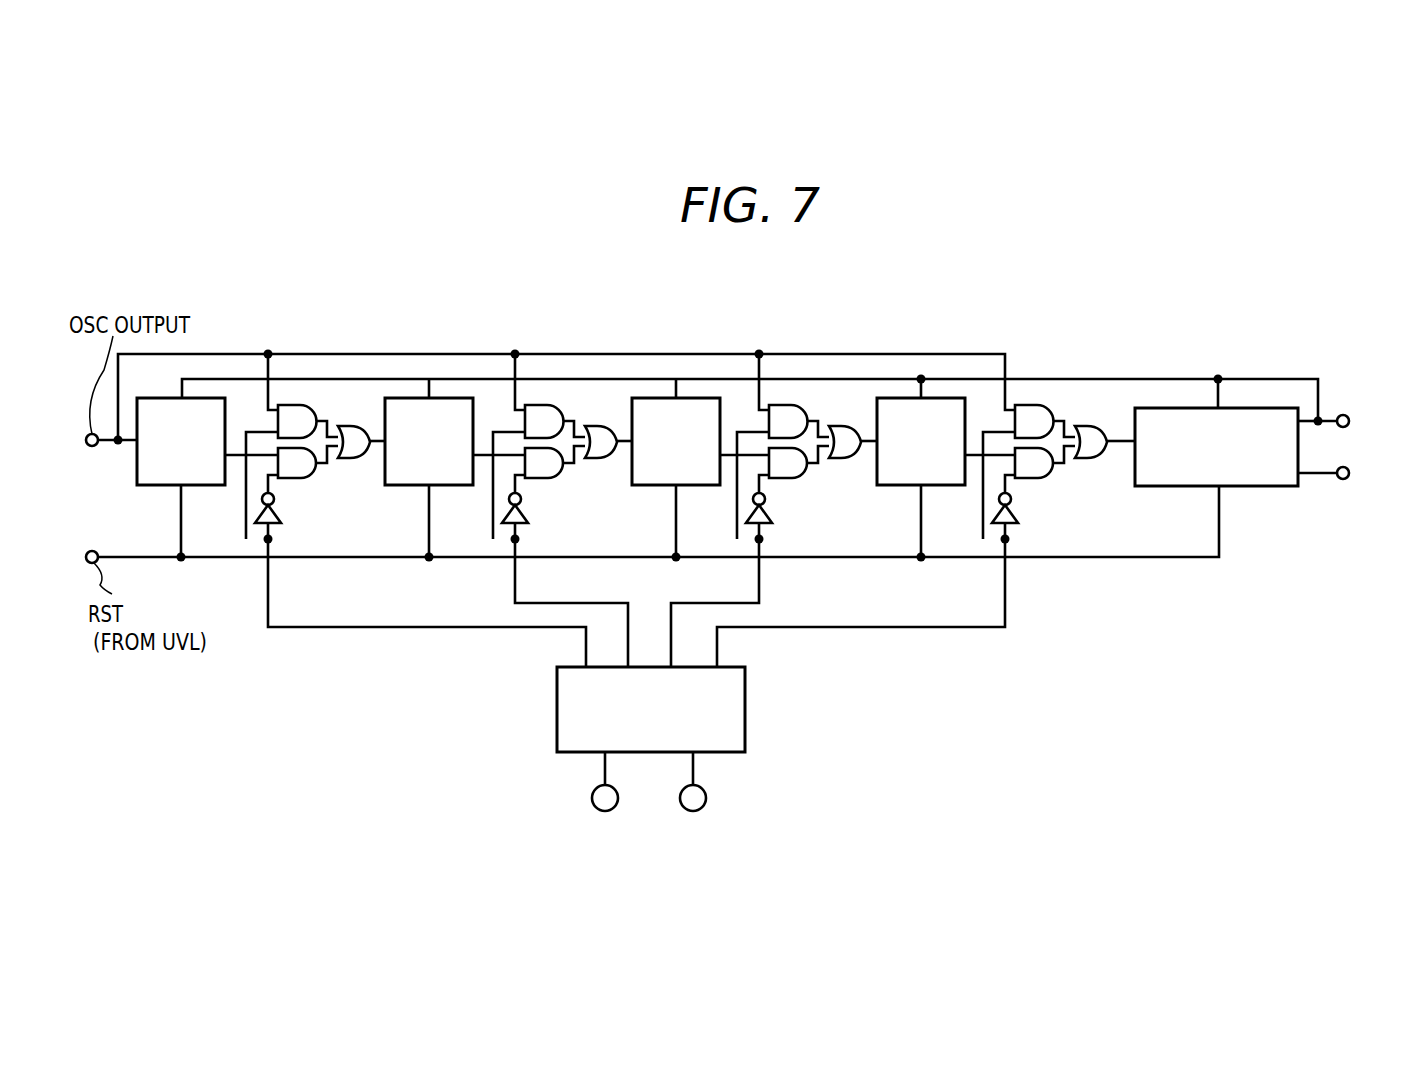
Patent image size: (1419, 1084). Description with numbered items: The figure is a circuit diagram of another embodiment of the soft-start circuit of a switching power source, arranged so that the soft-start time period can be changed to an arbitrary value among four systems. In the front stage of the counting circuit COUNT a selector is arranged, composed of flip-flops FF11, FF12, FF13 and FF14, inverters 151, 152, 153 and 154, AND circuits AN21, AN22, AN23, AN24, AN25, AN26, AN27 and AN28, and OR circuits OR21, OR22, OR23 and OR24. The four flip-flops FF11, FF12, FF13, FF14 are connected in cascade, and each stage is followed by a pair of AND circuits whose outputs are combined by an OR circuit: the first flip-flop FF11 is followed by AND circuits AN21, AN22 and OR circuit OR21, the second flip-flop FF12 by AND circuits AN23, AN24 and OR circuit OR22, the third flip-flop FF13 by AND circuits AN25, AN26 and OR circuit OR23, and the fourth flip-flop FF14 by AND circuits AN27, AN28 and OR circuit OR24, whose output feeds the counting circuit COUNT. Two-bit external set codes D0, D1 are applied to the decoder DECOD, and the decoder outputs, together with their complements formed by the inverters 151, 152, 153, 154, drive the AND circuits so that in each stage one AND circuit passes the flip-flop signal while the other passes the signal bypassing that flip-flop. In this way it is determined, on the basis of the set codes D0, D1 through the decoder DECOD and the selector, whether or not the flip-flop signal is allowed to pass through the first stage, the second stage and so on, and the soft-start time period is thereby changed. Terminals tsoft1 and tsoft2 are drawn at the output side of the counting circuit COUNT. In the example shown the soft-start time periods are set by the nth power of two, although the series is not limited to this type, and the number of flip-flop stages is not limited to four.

The flip-flop FF11 is at (203, 398).
The flip-flop FF12 is at (451, 398).
The flip-flop FF13 is at (698, 398).
The flip-flop FF14 is at (943, 398).
The AND circuit AN21 is at (293, 405).
The AND circuit AN22 is at (295, 478).
The AND circuit AN23 is at (540, 405).
The AND circuit AN24 is at (542, 478).
The AND circuit AN25 is at (784, 405).
The AND circuit AN26 is at (786, 478).
The AND circuit AN27 is at (1030, 405).
The AND circuit AN28 is at (1032, 478).
The OR circuit OR21 is at (350, 458).
The OR circuit OR22 is at (597, 458).
The OR circuit OR23 is at (841, 458).
The OR circuit OR24 is at (1087, 458).
The inverter 151 is at (283, 527).
The inverter 152 is at (530, 527).
The inverter 153 is at (774, 527).
The inverter 154 is at (1020, 527).
The counting circuit COUNT is at (1157, 408).
The decoder DECOD is at (745, 707).
The external set code D1 is at (613, 808).
The external set code D0 is at (701, 808).
The soft-start terminal tsoft2 (SW3) tsoft2 is at (1348, 415).
The soft-start terminal tsoft1 (SW4) tsoft1 is at (1347, 480).